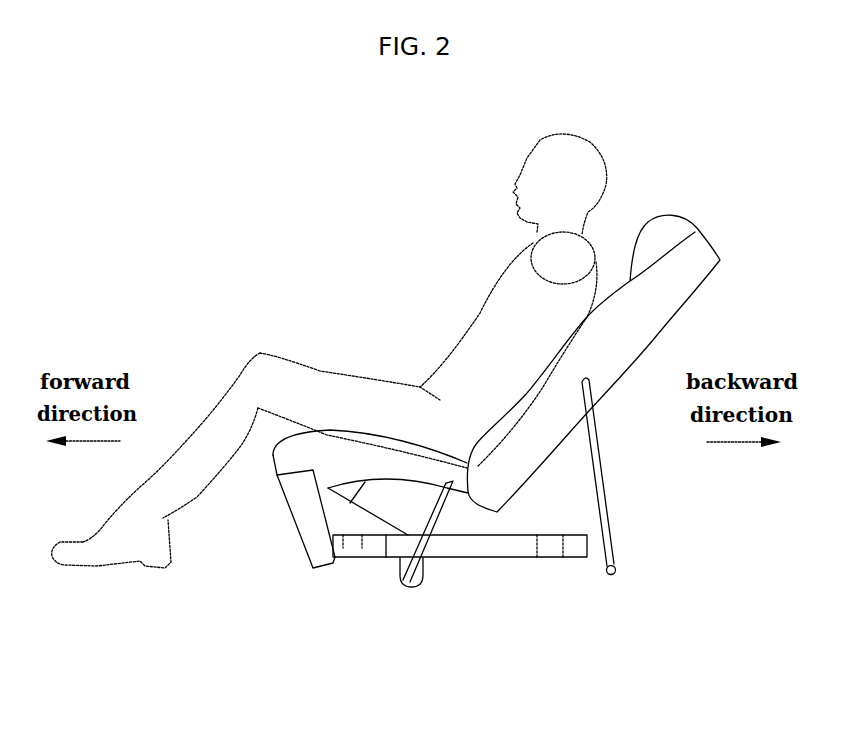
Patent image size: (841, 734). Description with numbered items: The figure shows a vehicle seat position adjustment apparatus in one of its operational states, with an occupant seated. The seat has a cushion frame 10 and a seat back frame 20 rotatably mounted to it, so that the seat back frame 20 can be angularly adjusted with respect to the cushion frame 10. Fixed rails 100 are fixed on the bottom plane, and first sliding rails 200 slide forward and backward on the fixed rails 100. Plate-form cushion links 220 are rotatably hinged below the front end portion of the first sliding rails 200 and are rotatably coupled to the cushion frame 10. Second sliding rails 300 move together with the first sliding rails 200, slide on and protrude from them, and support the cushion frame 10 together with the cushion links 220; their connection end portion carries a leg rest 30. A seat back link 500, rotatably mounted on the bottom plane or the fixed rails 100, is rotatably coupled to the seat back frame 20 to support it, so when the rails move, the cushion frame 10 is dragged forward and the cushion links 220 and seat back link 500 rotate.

The cushion frame 10 is at (343, 457).
The seat back frame 20 is at (650, 323).
The leg rest 30 is at (293, 508).
The fixed rails 100 is at (502, 558).
The first sliding rails 200 is at (372, 547).
The cushion links 220 is at (431, 560).
The second sliding rails 300 is at (346, 545).
The seat back link 500 is at (603, 482).